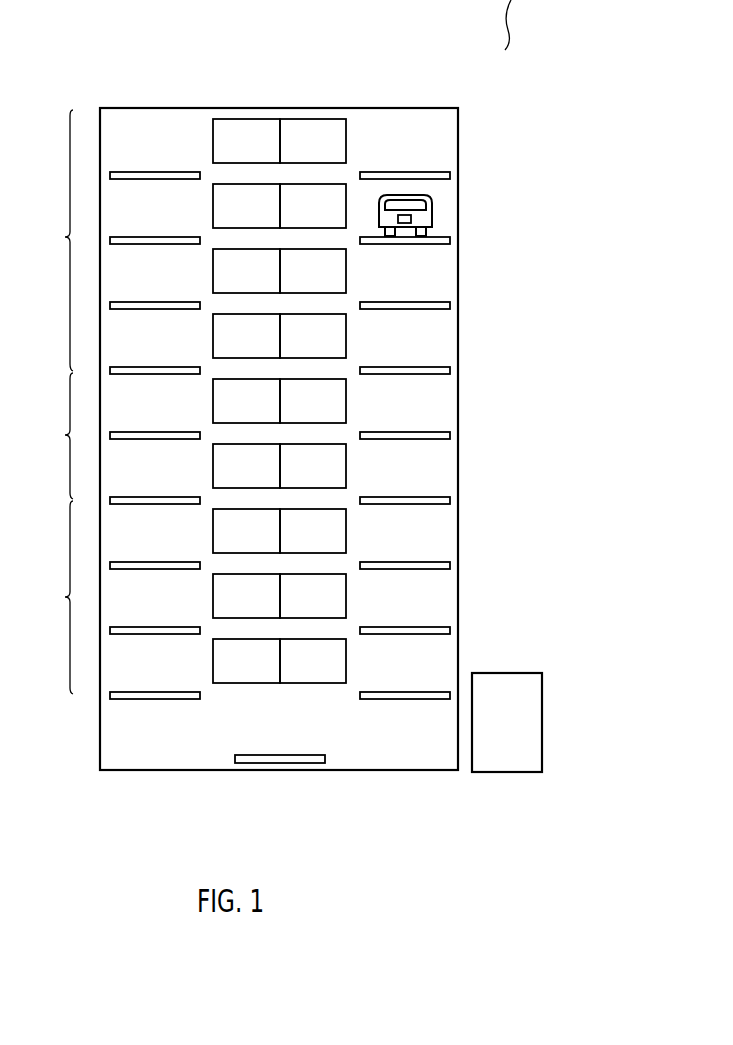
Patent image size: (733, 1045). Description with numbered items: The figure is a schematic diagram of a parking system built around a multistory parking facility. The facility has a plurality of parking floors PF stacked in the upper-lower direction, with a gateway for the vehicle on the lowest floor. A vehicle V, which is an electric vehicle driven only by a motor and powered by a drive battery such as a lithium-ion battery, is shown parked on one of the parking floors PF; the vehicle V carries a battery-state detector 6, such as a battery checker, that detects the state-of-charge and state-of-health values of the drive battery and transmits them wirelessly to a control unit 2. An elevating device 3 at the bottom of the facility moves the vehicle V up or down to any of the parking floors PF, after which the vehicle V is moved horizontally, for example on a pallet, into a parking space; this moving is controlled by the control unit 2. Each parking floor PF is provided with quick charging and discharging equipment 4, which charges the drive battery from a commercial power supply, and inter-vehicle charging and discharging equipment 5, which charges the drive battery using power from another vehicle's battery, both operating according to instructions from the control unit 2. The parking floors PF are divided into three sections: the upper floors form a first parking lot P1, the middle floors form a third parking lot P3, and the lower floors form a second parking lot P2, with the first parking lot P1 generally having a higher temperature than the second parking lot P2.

The control unit 2 is at (542, 725).
The elevating device 3 is at (335, 754).
The quick charging and discharging equipment 4 is at (252, 119).
The inter-vehicle charging and discharging equipment 5 is at (318, 119).
The battery-state detector 6 is at (411, 219).
The vehicle V is at (432, 212).
The parking floor PF is at (445, 175).
The first parking lot P1 is at (52, 240).
The second parking lot P2 is at (52, 597).
The third parking lot P3 is at (52, 436).